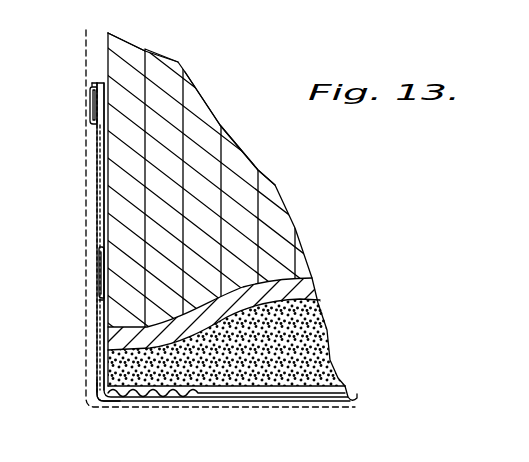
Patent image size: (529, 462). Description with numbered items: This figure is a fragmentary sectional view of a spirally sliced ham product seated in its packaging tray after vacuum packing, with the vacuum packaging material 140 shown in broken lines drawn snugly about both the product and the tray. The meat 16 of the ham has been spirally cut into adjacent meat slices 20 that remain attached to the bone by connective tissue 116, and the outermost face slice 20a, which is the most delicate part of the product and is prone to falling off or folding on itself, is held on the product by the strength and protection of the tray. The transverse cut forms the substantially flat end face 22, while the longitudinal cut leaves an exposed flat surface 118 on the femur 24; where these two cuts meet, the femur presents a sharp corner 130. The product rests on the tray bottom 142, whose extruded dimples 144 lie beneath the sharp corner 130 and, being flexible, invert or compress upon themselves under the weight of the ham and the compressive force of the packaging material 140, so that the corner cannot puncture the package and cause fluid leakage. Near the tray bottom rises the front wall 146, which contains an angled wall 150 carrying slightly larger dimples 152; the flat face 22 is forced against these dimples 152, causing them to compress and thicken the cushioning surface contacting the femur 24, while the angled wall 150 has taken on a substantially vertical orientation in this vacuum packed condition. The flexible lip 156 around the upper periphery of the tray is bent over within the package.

The meat 16 is at (232, 148).
The meat slices 20 is at (195, 97).
The face slice 20a is at (125, 57).
The flat end face 22 is at (107, 176).
The femur 24 is at (310, 338).
The connective tissue 116 is at (300, 297).
The exposed flat surface 118 is at (327, 388).
The sharp corner 130 is at (105, 388).
The vacuum packaging material 140 is at (100, 407).
The tray bottom 142 is at (354, 400).
The dimples 144 is at (202, 393).
The front wall 146 is at (100, 148).
The angled wall 150 is at (98, 262).
The dimples 152 is at (101, 298).
The lip 156 is at (91, 95).